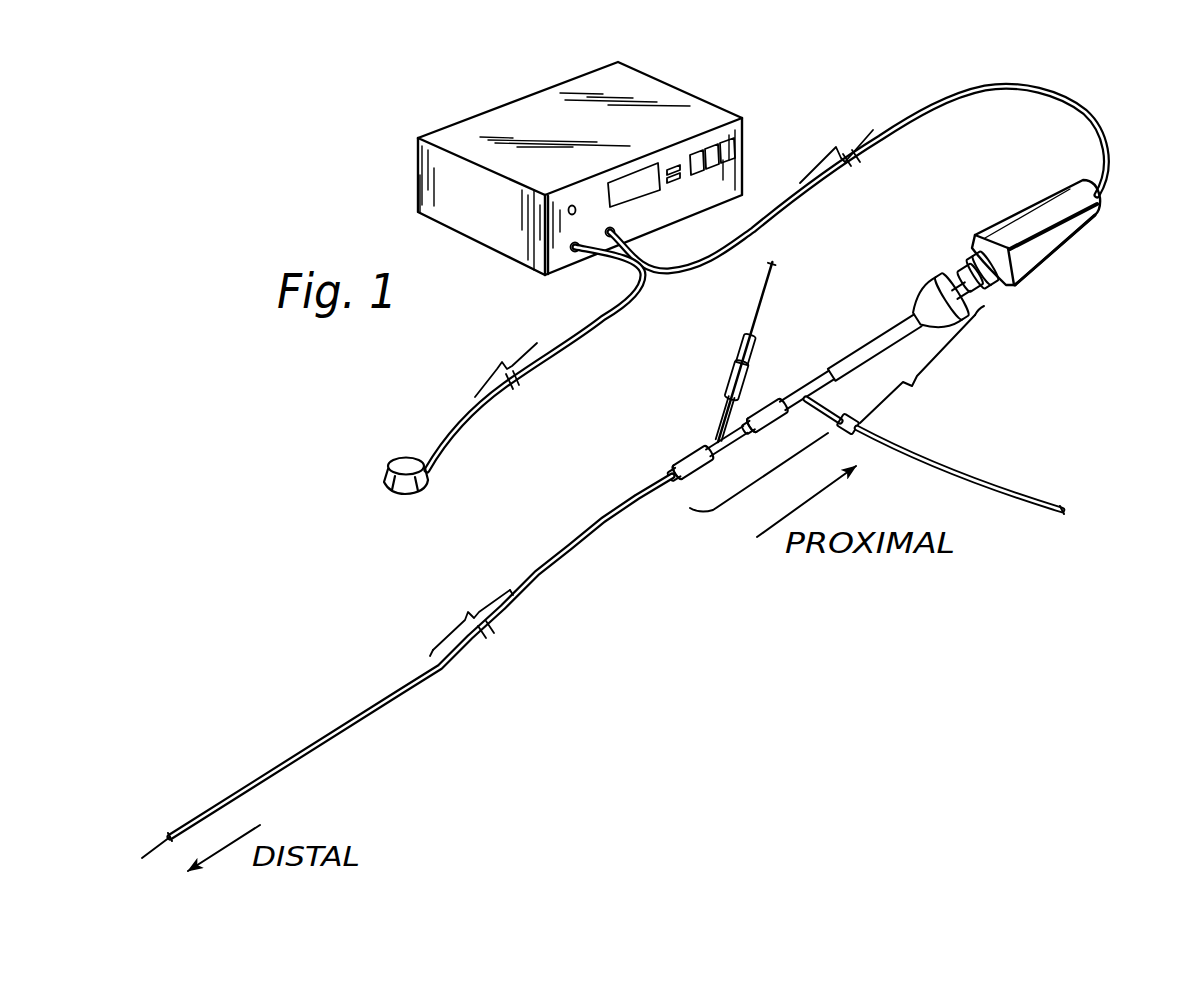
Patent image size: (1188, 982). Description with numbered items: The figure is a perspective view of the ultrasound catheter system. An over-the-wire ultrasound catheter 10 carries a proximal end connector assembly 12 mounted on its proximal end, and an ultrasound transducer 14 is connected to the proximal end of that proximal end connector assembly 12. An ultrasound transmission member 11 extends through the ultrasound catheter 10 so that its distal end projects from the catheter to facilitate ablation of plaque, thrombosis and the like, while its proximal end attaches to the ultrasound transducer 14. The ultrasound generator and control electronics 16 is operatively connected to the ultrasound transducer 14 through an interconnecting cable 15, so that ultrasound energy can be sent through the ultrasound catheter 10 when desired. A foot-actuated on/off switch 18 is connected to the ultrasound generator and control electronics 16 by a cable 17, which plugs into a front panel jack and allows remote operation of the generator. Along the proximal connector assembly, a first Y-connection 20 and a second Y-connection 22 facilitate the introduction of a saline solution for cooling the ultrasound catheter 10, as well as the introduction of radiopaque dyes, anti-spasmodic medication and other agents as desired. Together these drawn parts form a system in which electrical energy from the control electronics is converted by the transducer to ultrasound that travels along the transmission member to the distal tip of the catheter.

The over-the-wire ultrasound catheter 10 is at (496, 675).
The ultrasound transmission member 11 is at (155, 843).
The proximal end connector assembly 12 is at (831, 379).
The ultrasound transducer 14 is at (1073, 227).
The interconnecting cable 15 is at (1070, 97).
The ultrasound generator and control electronics 16 is at (712, 86).
The cable 17 is at (533, 368).
The foot-actuated on/off switch 18 is at (410, 484).
The first Y-connection 20 is at (748, 307).
The second Y-connection 22 is at (1008, 488).